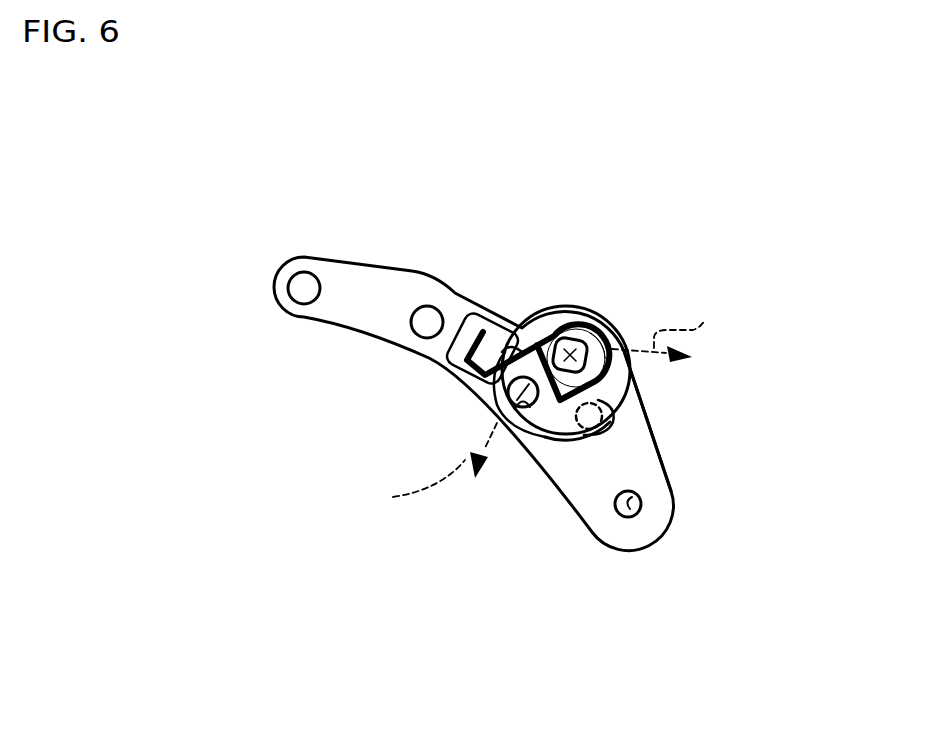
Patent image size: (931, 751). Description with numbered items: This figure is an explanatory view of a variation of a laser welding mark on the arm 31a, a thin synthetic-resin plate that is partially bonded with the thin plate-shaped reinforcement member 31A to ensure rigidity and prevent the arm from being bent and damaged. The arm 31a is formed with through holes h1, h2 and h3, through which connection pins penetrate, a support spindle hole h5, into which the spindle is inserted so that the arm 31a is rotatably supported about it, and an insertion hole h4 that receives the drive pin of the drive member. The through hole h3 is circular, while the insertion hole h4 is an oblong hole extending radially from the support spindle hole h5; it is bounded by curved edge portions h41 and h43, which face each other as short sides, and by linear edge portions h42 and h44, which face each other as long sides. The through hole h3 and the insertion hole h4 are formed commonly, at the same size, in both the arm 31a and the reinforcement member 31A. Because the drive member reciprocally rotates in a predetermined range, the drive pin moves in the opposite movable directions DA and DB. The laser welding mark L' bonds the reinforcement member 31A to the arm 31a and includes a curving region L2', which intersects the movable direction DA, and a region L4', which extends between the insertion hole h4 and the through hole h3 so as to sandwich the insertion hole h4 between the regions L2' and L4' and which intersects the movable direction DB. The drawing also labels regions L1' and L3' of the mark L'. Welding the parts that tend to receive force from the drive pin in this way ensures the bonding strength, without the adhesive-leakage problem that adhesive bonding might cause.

The reinforcement member 31A is at (617, 330).
The arm 31a is at (688, 478).
The through hole h1 is at (311, 279).
The through hole h2 is at (436, 312).
The through hole h3 is at (522, 405).
The insertion hole h4 is at (552, 340).
The edge portion h41 is at (569, 339).
The edge portion h42 is at (597, 334).
The edge portion h43 is at (583, 405).
The edge portion h44 is at (559, 398).
The support spindle hole h5 is at (638, 504).
The laser welding mark L' is at (475, 368).
The first link portion L1' is at (466, 373).
The region L2' is at (638, 370).
The third link portion L3' is at (651, 420).
The region L4' is at (485, 406).
The movable direction DA is at (668, 329).
The movable direction DB is at (427, 466).